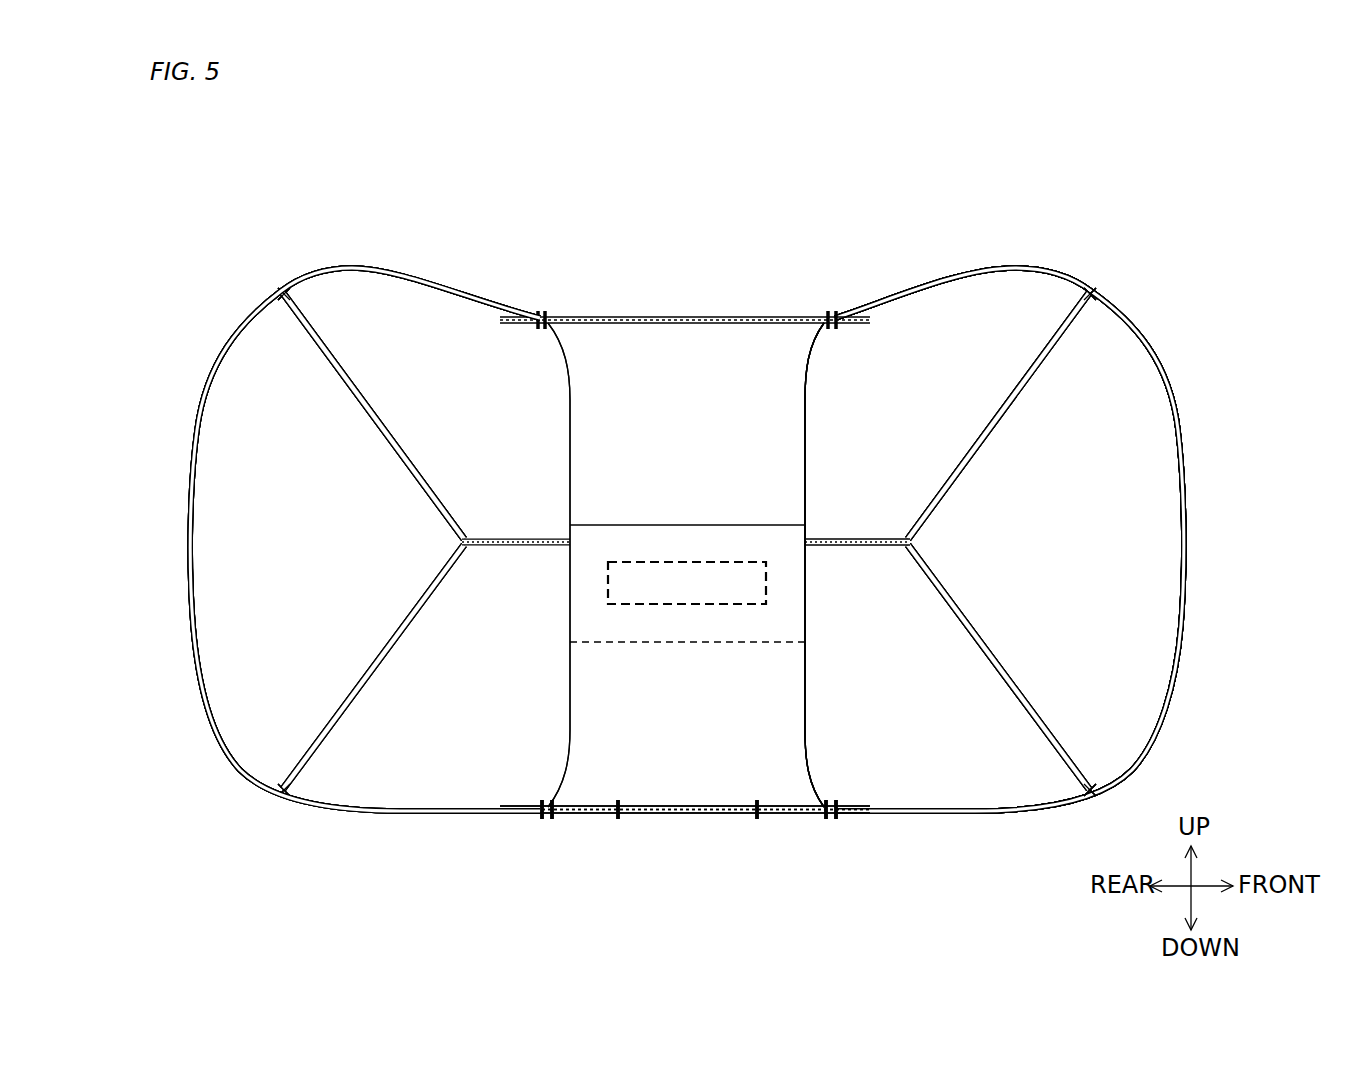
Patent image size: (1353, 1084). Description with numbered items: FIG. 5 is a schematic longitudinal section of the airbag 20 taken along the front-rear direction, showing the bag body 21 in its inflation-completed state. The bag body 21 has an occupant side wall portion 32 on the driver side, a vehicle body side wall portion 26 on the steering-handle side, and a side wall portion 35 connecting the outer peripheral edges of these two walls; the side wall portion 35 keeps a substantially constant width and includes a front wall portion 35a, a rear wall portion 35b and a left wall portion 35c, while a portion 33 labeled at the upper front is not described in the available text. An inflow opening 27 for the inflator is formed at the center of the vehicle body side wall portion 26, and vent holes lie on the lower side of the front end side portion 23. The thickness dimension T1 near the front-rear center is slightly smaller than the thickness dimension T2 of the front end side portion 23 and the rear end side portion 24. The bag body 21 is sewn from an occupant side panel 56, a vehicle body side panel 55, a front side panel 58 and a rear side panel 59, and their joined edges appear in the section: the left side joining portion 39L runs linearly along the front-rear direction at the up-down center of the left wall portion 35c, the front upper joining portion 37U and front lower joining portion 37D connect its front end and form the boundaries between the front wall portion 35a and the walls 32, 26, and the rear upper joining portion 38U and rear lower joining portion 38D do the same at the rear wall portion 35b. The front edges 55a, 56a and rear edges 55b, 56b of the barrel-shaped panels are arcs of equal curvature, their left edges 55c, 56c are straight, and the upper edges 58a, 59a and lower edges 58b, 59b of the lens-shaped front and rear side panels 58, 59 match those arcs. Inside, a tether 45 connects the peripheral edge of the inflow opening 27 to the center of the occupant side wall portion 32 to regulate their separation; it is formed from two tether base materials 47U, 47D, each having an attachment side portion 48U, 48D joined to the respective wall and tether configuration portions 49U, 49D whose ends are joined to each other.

The seat cushion pad / seat back 20 is at (1191, 245).
The bag body 21 is at (1188, 682).
The front end side portion 23 is at (1190, 330).
The rear end side portion 24 is at (200, 328).
The vehicle body side wall portion 26 is at (441, 815).
The inflow opening 27 is at (686, 816).
The occupant side wall portion 32 is at (919, 278).
The upper front frame member 33 is at (1024, 253).
The side wall portion 35 is at (1190, 502).
The front wall portion 35a is at (1186, 578).
The rear wall portion 35b is at (189, 581).
The left wall portion 35c is at (925, 705).
The front upper joining portion 37U is at (1006, 418).
The front lower joining portion 37D is at (1006, 661).
The rear upper joining portion 38U is at (401, 446).
The rear lower joining portion 38D is at (401, 636).
The left side joining portion 39L is at (516, 537).
The tether 45 is at (563, 634).
The tether base material 47U is at (822, 372).
The tether base material 47D is at (822, 648).
The attachment side portion 48U is at (686, 326).
The attachment side portion 48D is at (815, 800).
The tether configuration portion 49U is at (800, 412).
The tether configuration portion 49D is at (800, 616).
The vehicle body side panel 55 is at (1000, 815).
The front edge 55a is at (1011, 700).
The rear edge 55b is at (370, 680).
The left edge 55c is at (897, 550).
The occupant side panel 56 is at (965, 272).
The front edge 56a is at (1032, 396).
The rear edge 56b is at (366, 402).
The left edge 56c is at (855, 537).
The front side panel 58 is at (1180, 402).
The upper edge 58a is at (1050, 366).
The lower edge 58b is at (1050, 716).
The rear side panel 59 is at (196, 396).
The upper edge 59a is at (326, 366).
The lower edge 59b is at (326, 727).
The thickness dimension T1 is at (780, 805).
The thickness dimension T2 is at (352, 272).